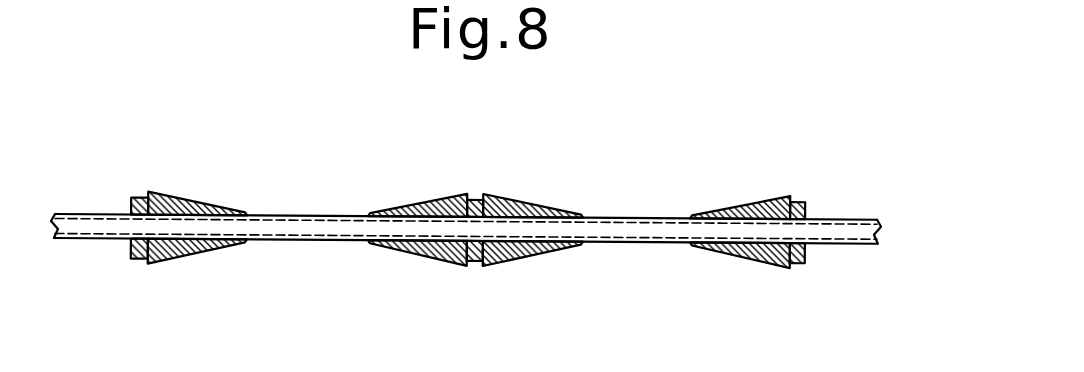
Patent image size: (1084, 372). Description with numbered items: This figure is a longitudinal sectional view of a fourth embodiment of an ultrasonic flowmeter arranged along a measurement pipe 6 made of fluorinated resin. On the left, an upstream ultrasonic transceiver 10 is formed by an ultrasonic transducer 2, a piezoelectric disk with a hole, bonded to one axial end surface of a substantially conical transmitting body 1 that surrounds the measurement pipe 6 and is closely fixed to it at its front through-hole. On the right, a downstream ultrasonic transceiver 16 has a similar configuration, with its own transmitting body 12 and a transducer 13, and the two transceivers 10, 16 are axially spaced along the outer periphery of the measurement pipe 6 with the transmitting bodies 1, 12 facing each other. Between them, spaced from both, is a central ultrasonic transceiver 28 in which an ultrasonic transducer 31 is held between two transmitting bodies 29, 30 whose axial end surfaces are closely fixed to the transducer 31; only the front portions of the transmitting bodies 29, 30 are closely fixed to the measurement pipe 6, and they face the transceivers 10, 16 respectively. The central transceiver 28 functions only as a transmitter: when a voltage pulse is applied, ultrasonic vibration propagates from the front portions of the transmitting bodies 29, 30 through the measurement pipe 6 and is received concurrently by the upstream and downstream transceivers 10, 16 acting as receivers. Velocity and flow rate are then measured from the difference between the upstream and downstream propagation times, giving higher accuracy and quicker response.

The transmitting body 1 is at (193, 200).
The ultrasonic transducer 2 is at (138, 198).
The measurement pipe 6 is at (322, 240).
The upstream ultrasonic transceiver 10 is at (157, 177).
The transmitting body 12 is at (743, 200).
The ring member 13 is at (800, 203).
The downstream ultrasonic transceiver 16 is at (785, 178).
The ultrasonic transceiver 28 is at (455, 167).
The transmitting body 29 is at (418, 200).
The transmitting body 30 is at (537, 198).
The ultrasonic transducer 31 is at (477, 197).